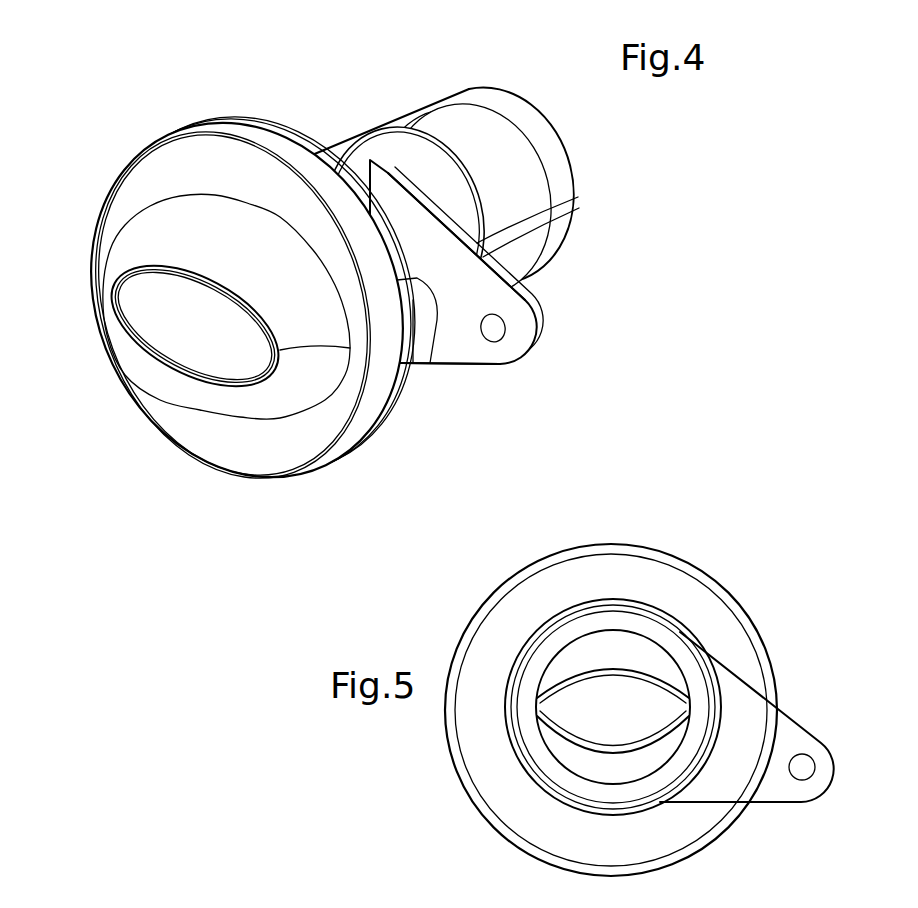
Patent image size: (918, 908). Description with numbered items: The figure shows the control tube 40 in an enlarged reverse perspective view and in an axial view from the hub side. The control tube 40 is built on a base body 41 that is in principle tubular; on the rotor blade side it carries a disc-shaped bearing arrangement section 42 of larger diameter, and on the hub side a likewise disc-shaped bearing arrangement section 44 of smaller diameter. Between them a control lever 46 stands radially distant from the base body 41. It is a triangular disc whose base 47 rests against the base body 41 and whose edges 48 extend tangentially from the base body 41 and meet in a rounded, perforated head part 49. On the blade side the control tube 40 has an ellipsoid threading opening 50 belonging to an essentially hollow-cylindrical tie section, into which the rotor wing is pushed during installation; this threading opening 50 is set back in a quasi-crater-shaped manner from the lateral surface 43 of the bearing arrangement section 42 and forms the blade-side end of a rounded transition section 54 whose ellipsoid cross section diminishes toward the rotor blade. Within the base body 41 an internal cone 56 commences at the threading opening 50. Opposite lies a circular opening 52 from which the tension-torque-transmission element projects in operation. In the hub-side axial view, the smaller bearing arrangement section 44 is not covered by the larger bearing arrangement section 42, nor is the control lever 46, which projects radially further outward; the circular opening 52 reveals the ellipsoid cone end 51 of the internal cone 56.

In FIG. 4, the control tube 40 is at (361, 280).
In FIG. 4, the base body 41 is at (370, 135).
In FIG. 4, the bearing arrangement section 42 is at (253, 296).
In FIG. 5, the bearing arrangement section 42 is at (633, 548).
In FIG. 4, the lateral surface 43 is at (252, 453).
In FIG. 4, the bearing arrangement section 44 is at (478, 90).
In FIG. 5, the bearing arrangement section 44 is at (653, 610).
In FIG. 4, the control lever 46 is at (498, 296).
In FIG. 5, the control lever 46 is at (788, 727).
In FIG. 4, the base 47 is at (433, 366).
In FIG. 4, the edges 48 is at (475, 366).
In FIG. 4, the head part 49 is at (535, 320).
In FIG. 4, the threading opening 50 is at (172, 355).
In FIG. 5, the cone end 51 is at (570, 680).
In FIG. 4, the circular opening 52 is at (523, 174).
In FIG. 5, the circular opening 52 is at (680, 660).
In FIG. 4, the transition section 54 is at (128, 233).
In FIG. 4, the internal cone 56 is at (180, 347).